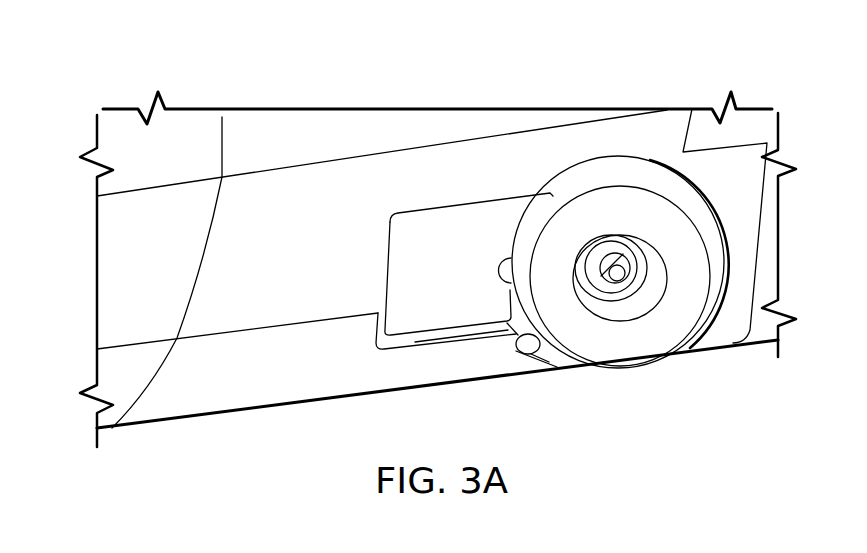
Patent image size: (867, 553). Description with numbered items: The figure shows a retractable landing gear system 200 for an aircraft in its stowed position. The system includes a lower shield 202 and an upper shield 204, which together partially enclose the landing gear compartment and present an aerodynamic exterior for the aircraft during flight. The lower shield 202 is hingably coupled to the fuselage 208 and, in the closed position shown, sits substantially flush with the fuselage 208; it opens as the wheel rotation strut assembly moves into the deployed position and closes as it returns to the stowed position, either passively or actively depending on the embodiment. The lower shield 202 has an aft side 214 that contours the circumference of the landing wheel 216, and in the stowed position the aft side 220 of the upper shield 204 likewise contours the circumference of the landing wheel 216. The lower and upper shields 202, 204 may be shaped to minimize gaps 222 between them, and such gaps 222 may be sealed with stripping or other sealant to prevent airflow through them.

The retractable landing gear system 200 is at (238, 80).
The lower shield 202 is at (263, 387).
The upper shield 204 is at (406, 243).
The fuselage 208 is at (105, 253).
The aft side 214 is at (533, 355).
The landing wheel 216 is at (665, 328).
The aft side 220 is at (511, 280).
The gaps 222 is at (440, 339).